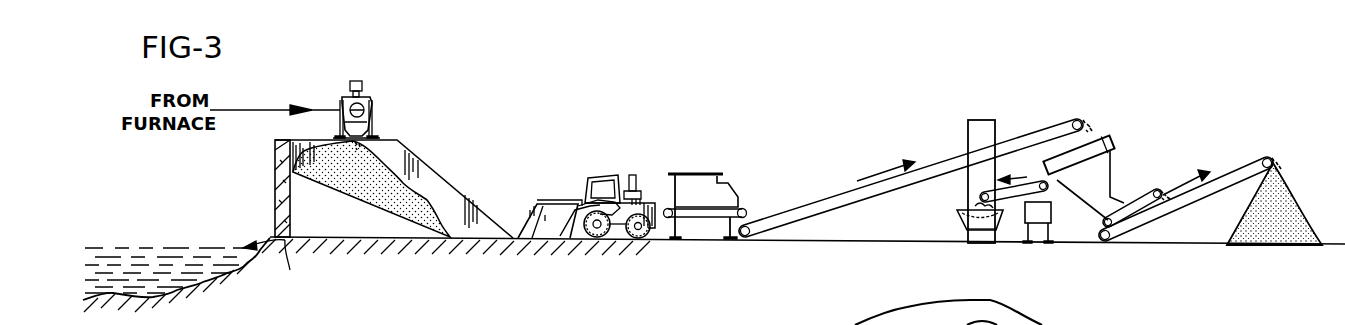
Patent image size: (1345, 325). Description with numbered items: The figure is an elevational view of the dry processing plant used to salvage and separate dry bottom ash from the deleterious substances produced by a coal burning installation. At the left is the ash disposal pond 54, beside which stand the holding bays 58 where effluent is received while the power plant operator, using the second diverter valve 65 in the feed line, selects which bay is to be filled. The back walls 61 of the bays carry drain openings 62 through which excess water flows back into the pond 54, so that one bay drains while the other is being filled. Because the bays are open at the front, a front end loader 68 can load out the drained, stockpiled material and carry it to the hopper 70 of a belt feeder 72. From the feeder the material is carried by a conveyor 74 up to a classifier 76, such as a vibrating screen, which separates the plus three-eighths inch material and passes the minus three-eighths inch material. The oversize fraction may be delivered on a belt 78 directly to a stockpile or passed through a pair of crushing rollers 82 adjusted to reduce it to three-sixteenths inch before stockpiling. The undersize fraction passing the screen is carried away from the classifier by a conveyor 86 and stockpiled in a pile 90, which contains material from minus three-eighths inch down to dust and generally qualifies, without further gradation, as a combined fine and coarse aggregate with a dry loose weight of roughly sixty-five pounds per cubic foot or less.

The ash disposal pond 54 is at (137, 260).
The holding bays 58 is at (447, 188).
The back walls 61 is at (275, 180).
The drain openings 62 is at (272, 267).
The second diverter valve 65 is at (372, 104).
The front end loader 68 is at (568, 186).
The hopper 70 is at (697, 182).
The belt feeder 72 is at (705, 219).
The conveyor 74 is at (828, 192).
The classifier 76 is at (1103, 139).
The belt 78 is at (1050, 208).
The crushing rollers 82 is at (953, 207).
The conveyor 86 is at (1230, 178).
The pile 90 is at (1287, 210).